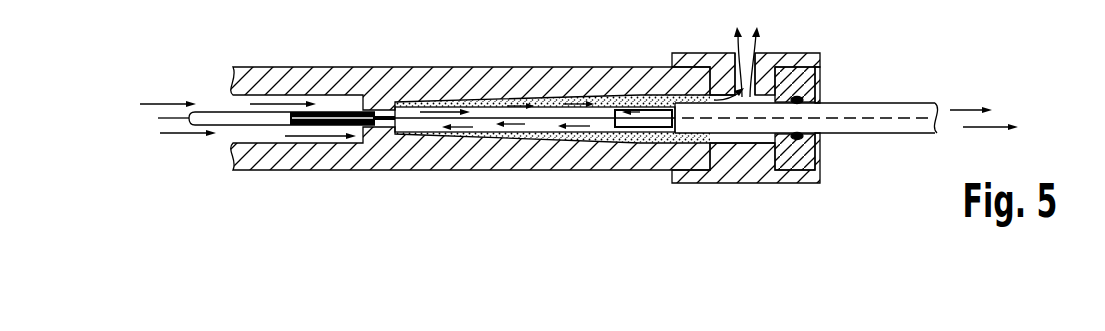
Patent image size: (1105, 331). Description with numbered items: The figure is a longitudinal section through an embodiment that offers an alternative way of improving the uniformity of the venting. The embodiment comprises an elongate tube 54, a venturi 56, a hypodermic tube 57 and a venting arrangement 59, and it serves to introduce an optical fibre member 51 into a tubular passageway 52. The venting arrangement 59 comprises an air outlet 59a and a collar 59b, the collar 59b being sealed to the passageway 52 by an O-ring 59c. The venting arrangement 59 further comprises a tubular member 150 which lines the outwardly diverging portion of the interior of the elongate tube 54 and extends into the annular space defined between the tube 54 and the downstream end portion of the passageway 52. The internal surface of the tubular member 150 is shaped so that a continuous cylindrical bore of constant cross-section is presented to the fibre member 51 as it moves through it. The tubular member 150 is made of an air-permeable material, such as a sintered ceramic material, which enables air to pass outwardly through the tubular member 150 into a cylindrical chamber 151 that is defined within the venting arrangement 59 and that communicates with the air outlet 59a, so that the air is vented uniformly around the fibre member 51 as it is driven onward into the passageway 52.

The optical fibre member 51 is at (943, 118).
The tubular passageway 52 is at (860, 124).
The elongate tube 54 is at (518, 155).
The venturi 56 is at (385, 126).
The hypodermic tube 57 is at (256, 120).
The venting arrangement 59 is at (794, 46).
The air outlet 59a is at (735, 56).
The collar 59b is at (808, 74).
The O-ring 59c is at (806, 98).
The tubular member 150 is at (503, 102).
The cylindrical chamber 151 is at (745, 139).